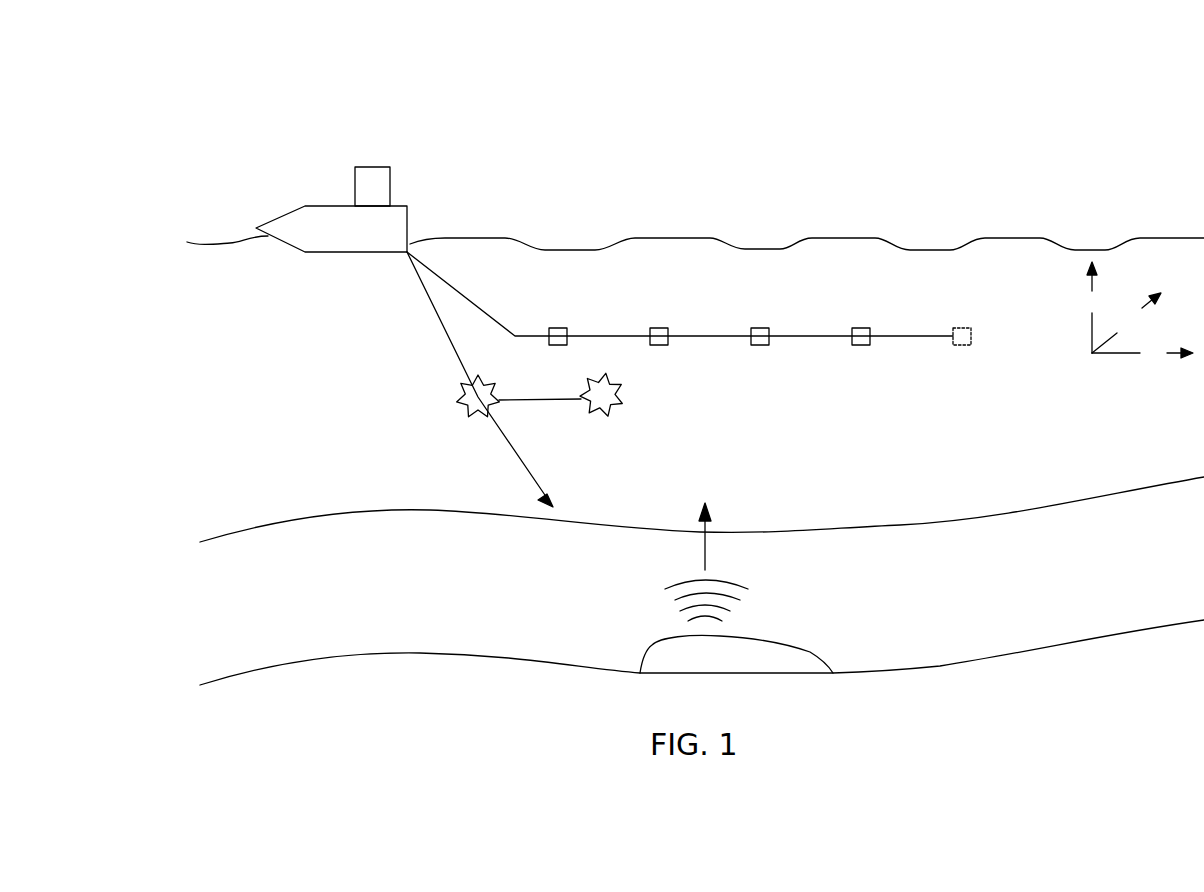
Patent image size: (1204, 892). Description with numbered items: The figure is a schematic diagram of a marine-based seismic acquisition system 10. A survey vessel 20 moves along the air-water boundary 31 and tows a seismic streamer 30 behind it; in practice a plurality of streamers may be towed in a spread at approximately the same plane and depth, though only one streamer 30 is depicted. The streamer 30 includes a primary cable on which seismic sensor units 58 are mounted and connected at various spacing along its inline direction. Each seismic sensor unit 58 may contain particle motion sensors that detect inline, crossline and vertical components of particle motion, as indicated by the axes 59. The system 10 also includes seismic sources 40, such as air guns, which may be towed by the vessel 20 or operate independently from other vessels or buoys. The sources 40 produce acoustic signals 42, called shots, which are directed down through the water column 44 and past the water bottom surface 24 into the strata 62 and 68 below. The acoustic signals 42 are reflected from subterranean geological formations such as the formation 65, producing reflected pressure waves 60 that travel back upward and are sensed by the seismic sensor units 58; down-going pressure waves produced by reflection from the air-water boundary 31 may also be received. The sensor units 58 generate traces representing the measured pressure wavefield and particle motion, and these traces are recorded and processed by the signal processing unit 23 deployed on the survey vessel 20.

The marine-based seismic acquisition system 10 is at (238, 163).
The survey vessel 20 is at (403, 205).
The signal processing unit 23 is at (370, 167).
The water bottom surface 24 is at (885, 528).
The seismic streamer 30 is at (477, 306).
The air-water boundary 31 is at (983, 238).
The seismic source 40 is at (503, 395).
The acoustic signal 42 is at (530, 477).
The water column 44 is at (349, 381).
The seismic sensor unit 58 is at (560, 328).
The axes 59 is at (1091, 380).
The pressure wave 60 is at (652, 607).
The stratum 62 is at (331, 587).
The formation 65 is at (723, 665).
The stratum 68 is at (373, 697).